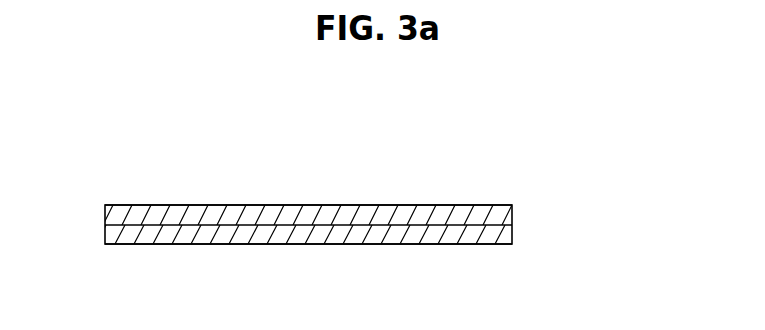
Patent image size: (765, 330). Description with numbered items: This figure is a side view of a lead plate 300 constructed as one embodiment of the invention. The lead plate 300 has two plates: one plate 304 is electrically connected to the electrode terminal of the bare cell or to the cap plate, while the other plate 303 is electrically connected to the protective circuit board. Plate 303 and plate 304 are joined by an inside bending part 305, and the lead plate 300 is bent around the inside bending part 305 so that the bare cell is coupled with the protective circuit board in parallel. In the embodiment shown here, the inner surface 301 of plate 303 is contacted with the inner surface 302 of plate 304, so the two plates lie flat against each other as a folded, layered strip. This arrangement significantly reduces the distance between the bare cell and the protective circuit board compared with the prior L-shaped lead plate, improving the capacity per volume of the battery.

The lead plate 300 is at (97, 131).
The inner surface of plate 303 301 is at (218, 232).
The inner surface of plate 304 302 is at (248, 218).
The plate 303 is at (466, 205).
The plate 304 is at (430, 243).
The inside bending part 305 is at (497, 228).